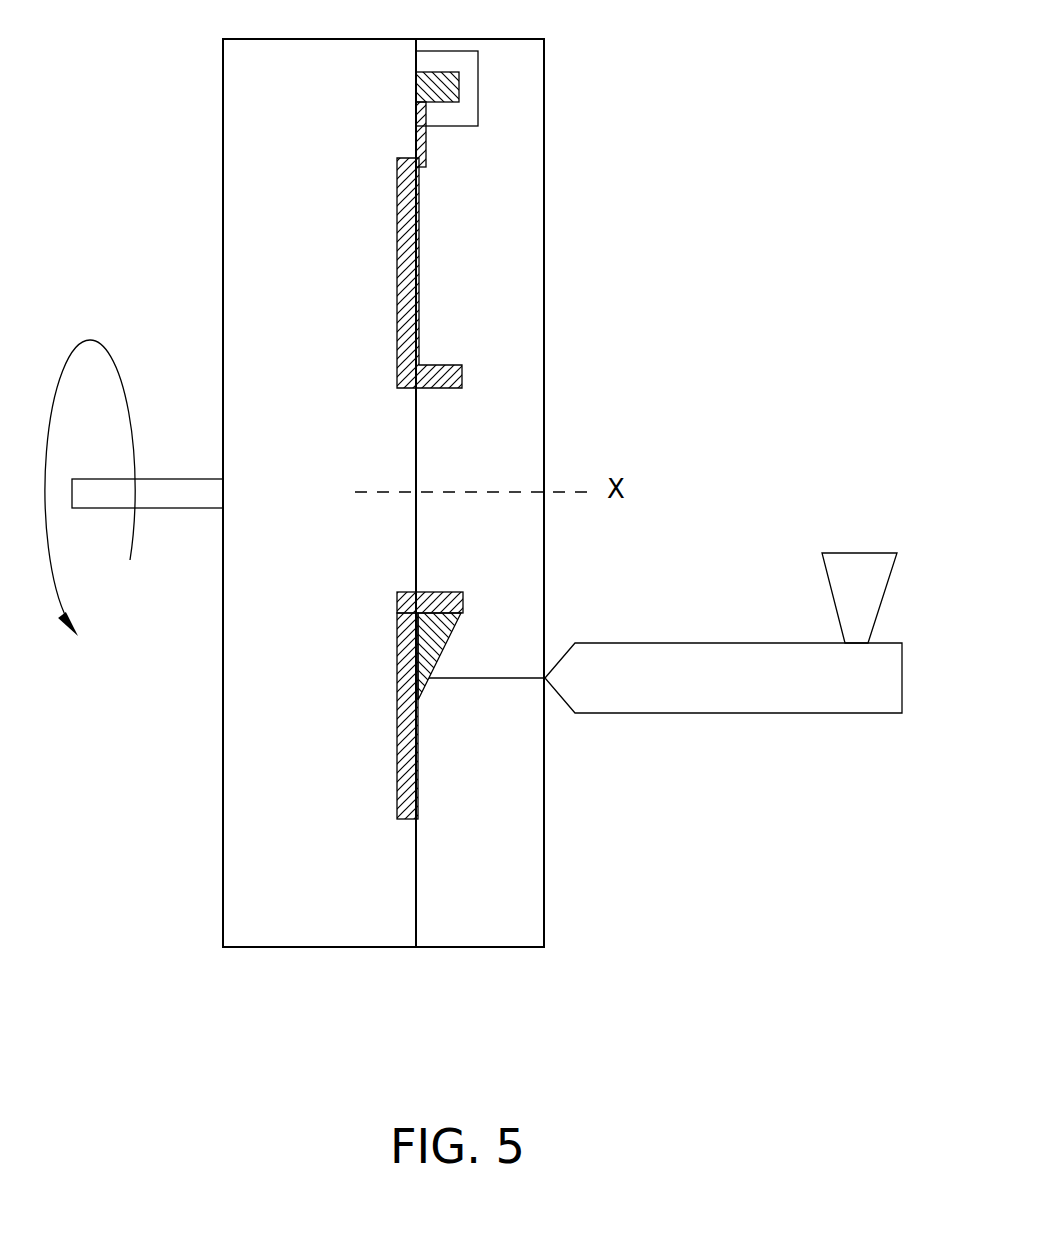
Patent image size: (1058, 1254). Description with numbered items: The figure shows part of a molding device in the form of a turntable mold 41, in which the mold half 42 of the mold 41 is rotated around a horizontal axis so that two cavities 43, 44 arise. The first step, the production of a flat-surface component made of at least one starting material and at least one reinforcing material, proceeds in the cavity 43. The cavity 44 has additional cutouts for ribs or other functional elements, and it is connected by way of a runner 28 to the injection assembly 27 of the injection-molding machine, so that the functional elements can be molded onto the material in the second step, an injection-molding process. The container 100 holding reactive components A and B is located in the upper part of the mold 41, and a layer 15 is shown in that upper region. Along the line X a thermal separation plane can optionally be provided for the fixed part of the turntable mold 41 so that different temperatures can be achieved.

The turntable mold 41 is at (597, 258).
The mold half 42 is at (272, 119).
The cavity 43 is at (407, 232).
The cavity 44 is at (408, 693).
The molded layer 15 is at (426, 142).
The container 100 is at (459, 85).
The injection assembly 27 is at (707, 668).
The runner 28 is at (505, 678).